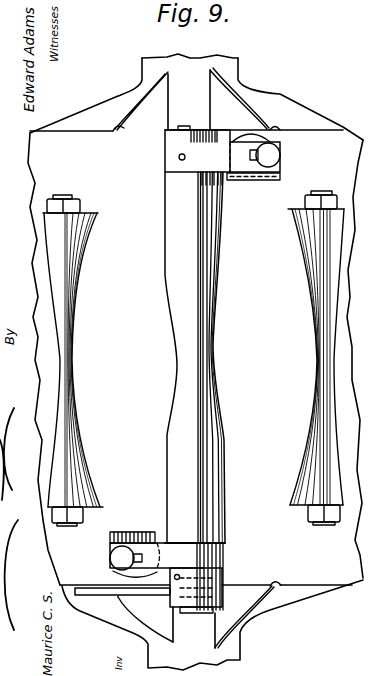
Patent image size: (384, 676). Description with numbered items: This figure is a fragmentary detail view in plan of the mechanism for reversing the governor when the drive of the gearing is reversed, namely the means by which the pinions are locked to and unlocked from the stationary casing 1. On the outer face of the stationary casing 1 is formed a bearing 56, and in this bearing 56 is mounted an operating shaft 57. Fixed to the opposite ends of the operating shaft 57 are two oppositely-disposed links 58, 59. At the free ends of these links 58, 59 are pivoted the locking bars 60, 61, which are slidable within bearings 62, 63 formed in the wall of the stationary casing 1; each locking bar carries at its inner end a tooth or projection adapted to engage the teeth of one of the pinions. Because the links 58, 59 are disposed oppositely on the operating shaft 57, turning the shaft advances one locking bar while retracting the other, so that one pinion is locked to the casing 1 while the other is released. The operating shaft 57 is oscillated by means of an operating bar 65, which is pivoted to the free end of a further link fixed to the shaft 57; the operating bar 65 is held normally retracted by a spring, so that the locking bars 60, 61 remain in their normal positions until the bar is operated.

The stationary casing 1 is at (331, 138).
The bearing 56 is at (210, 417).
The operating shaft 57 is at (187, 128).
The link 58 is at (218, 148).
The link 59 is at (150, 547).
The locking bar 60 is at (282, 160).
The locking bar 61 is at (110, 558).
The bearing 62 is at (270, 134).
The bearing 63 is at (120, 577).
The operating bar 65 is at (103, 598).